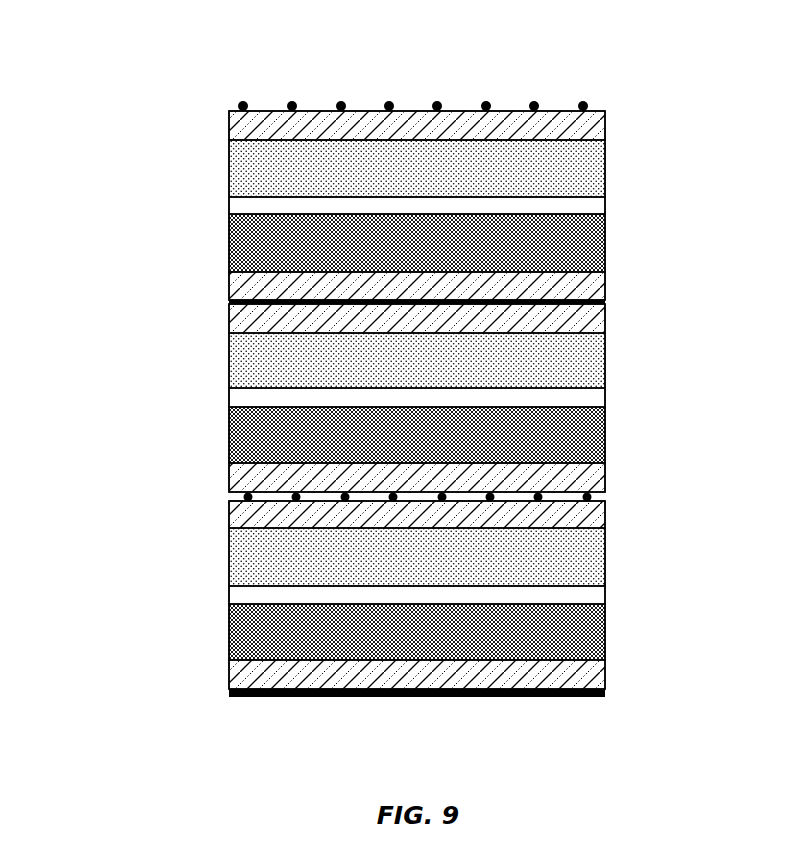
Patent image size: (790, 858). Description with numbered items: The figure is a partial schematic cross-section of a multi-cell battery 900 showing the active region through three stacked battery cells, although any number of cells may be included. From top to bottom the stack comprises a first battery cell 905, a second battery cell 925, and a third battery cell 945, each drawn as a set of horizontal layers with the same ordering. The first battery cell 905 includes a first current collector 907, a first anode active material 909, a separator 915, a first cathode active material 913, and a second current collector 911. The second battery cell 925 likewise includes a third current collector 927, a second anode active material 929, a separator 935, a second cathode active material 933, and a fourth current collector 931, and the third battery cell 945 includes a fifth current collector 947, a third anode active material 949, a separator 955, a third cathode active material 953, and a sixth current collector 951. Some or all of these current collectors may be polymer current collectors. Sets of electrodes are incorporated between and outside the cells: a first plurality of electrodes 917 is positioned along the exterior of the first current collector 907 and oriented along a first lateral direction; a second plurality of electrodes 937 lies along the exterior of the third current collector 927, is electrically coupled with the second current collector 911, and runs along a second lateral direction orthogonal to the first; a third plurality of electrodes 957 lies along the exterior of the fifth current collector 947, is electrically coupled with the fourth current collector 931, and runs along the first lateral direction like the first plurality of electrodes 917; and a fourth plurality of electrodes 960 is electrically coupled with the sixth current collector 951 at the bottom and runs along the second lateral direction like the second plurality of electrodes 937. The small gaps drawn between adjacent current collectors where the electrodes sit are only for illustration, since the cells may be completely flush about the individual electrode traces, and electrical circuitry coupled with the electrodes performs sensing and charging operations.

The multi-cell battery 900 is at (118, 83).
The first battery cell 905 is at (229, 177).
The first current collector 907 is at (605, 120).
The first anode active material 909 is at (605, 160).
The second current collector 911 is at (605, 282).
The first cathode active material 913 is at (605, 243).
The separator 915 is at (605, 205).
The first plurality of electrodes 917 is at (489, 100).
The second battery cell 925 is at (229, 380).
The third current collector 927 is at (605, 318).
The second anode active material 929 is at (605, 353).
The fourth current collector 931 is at (605, 475).
The second cathode active material 933 is at (605, 433).
The separator 935 is at (605, 393).
The second plurality of electrodes 937 is at (229, 303).
The third battery cell 945 is at (229, 618).
The fifth current collector 947 is at (605, 513).
The third anode active material 949 is at (605, 552).
The sixth current collector 951 is at (605, 673).
The third cathode active material 953 is at (605, 627).
The separator 955 is at (605, 590).
The third plurality of electrodes 957 is at (229, 505).
The fourth plurality of electrodes 960 is at (248, 698).